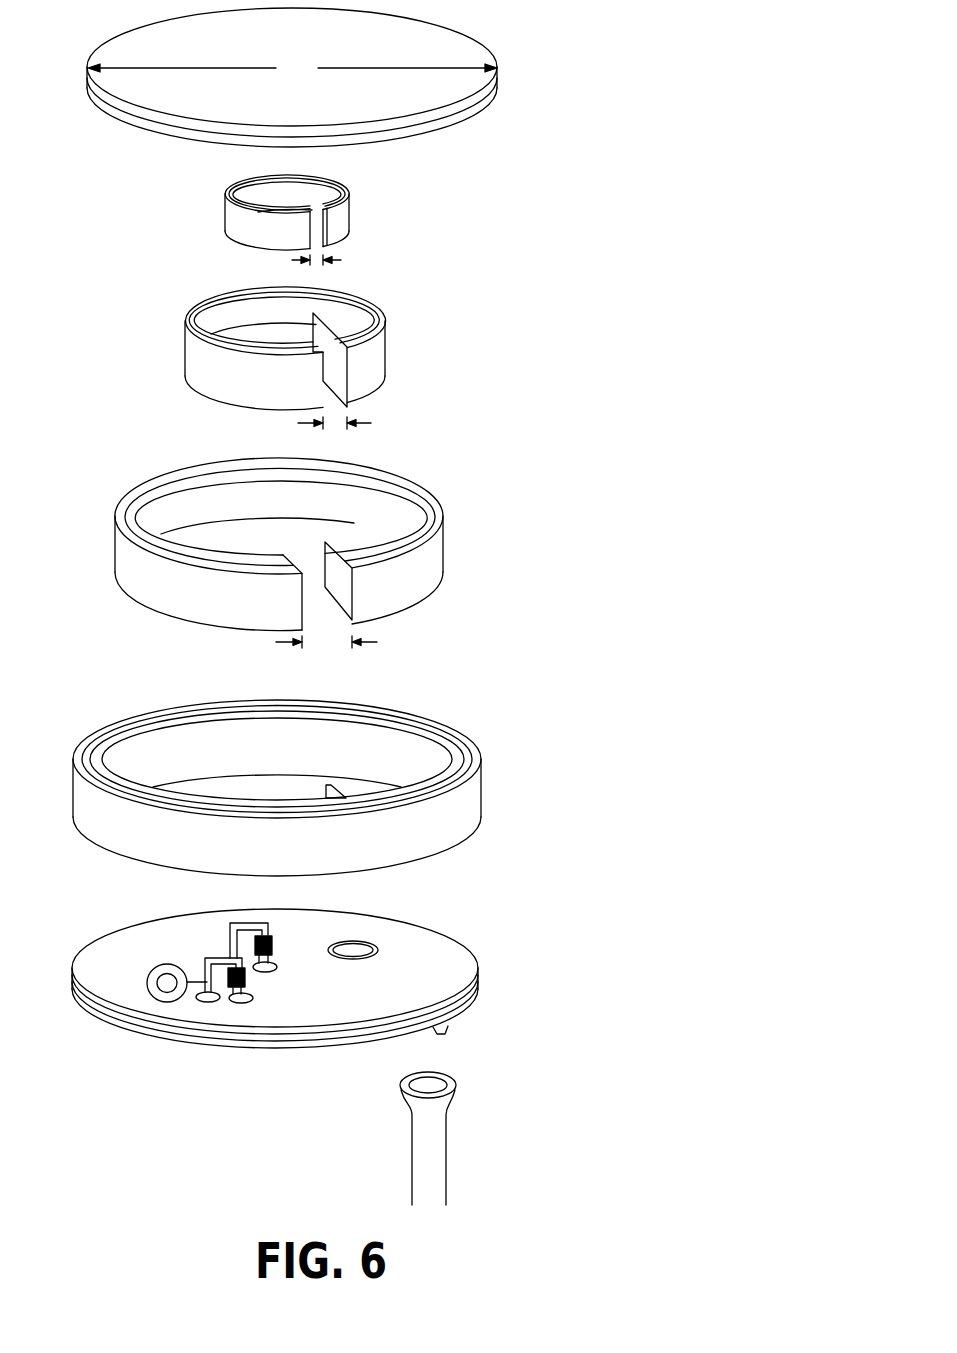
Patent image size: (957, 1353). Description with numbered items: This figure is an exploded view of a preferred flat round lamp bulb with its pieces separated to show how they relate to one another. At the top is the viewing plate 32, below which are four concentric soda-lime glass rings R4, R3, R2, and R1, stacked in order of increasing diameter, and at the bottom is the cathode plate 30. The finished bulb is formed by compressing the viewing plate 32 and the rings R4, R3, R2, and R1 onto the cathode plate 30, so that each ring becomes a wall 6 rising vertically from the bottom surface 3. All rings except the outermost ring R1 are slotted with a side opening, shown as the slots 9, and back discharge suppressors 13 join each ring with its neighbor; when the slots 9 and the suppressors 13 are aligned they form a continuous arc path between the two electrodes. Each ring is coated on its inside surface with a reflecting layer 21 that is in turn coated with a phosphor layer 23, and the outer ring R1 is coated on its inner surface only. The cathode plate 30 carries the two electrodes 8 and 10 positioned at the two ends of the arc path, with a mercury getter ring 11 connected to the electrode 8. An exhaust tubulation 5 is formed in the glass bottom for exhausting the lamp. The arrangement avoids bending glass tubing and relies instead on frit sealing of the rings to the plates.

The viewing plate 32 is at (432, 40).
The wall 6 is at (300, 521).
The ring R4 is at (322, 212).
The ring R3 is at (390, 338).
The ring R2 is at (448, 560).
The ring R1 is at (300, 788).
The slotted opening 9 is at (326, 250).
The back discharge suppressor 13 is at (437, 257).
The reflecting layer 21 is at (240, 182).
The phosphor layer 23 is at (261, 183).
The cathode plate 30 is at (293, 994).
The mercury getter ring 11 is at (150, 998).
The electrode 8 is at (229, 982).
The electrode 10 is at (275, 946).
The bottom surface 3 is at (462, 1047).
The exhaust tubulation 5 is at (447, 1130).